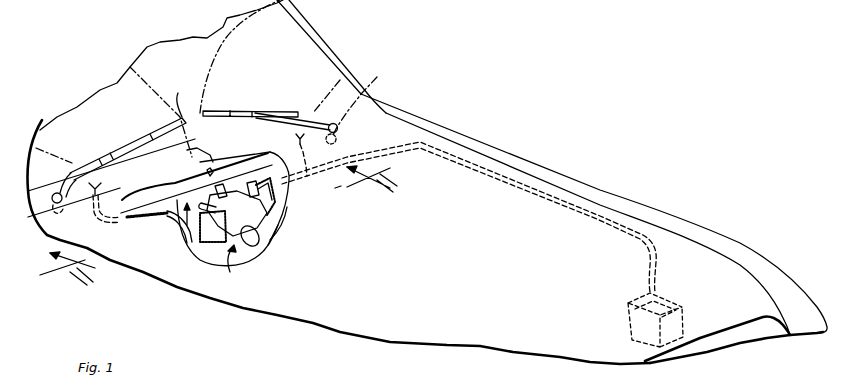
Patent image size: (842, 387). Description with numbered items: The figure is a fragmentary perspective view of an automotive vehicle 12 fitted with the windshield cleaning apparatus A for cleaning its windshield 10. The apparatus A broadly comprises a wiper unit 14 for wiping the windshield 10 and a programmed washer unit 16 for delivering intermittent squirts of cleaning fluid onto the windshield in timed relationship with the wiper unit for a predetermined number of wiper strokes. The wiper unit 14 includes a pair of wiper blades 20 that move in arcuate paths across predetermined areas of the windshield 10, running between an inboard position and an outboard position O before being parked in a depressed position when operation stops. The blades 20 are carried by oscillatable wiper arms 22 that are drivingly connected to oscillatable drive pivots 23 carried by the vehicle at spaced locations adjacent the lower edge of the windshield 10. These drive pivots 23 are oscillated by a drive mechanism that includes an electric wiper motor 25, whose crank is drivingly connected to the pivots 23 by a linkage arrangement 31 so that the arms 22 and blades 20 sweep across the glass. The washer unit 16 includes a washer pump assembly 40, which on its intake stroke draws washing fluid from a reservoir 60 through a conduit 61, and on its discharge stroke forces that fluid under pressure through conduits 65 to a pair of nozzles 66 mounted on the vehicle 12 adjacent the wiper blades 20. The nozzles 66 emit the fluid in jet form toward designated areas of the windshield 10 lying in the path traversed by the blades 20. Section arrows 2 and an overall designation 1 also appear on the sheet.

The windshield wiper system 1 is at (183, 96).
The windshield 10 is at (163, 48).
The automotive vehicle 12 is at (477, 144).
The wiper unit 14 is at (184, 246).
The programmed washer unit 16 is at (262, 213).
The wiper blades 20 is at (233, 111).
The wiper arms 22 is at (318, 114).
The drive pivots 23 is at (62, 207).
The electric wiper motor 25 is at (267, 250).
The linkage arrangement 31 is at (283, 198).
The washer pump assembly 40 is at (212, 247).
The reservoir 60 is at (630, 318).
The conduit 61 is at (522, 190).
The conduits 65 is at (316, 167).
The nozzles 66 is at (196, 166).
The section line 2 is at (217, 233).
The outboard position O is at (313, 38).
The windshield cleaning apparatus A is at (238, 268).